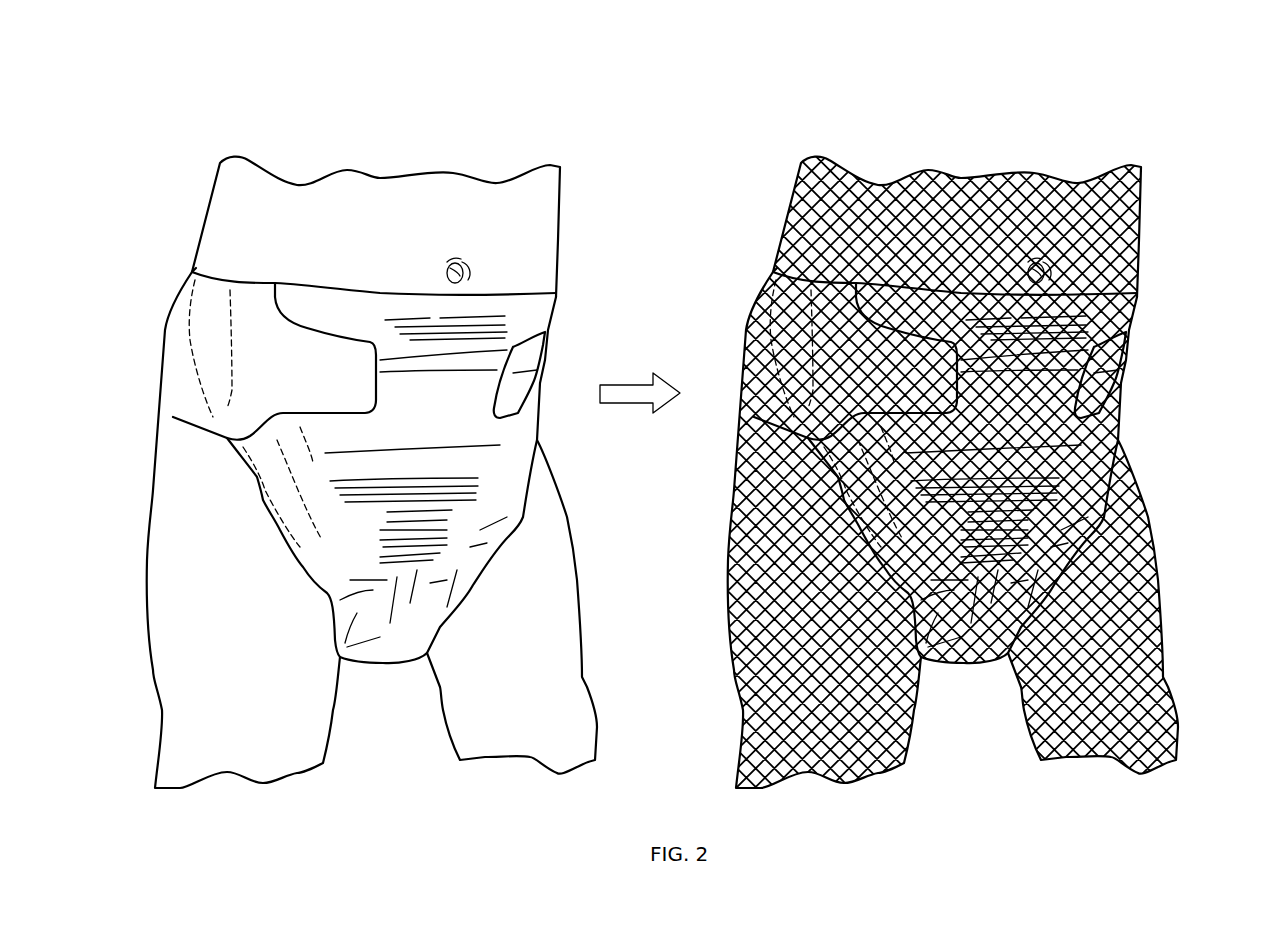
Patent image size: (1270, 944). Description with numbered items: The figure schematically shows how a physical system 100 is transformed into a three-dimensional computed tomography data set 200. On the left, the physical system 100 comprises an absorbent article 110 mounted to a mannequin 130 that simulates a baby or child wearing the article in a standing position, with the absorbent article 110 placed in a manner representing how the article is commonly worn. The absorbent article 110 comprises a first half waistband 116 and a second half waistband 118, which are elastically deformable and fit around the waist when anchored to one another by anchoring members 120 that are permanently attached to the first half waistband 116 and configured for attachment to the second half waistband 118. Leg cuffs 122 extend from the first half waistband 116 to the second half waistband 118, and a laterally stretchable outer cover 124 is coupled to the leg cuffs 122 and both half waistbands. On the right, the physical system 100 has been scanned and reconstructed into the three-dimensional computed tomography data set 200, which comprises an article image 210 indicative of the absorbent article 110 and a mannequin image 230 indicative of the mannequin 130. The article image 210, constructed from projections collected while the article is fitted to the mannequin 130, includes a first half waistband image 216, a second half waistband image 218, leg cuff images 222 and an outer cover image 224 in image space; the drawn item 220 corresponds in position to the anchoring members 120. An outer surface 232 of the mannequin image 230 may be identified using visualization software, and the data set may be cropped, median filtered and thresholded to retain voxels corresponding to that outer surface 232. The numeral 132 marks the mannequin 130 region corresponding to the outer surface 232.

The physical system 100 is at (395, 422).
The absorbent article 110 is at (395, 440).
The first half waistband 116 is at (195, 272).
The second half waistband 118 is at (515, 303).
The anchoring members 120 is at (535, 372).
The leg cuffs 122 is at (293, 527).
The outer cover 124 is at (433, 636).
The mannequin 130 is at (493, 210).
The waist opening edge 132 is at (365, 272).
The three-dimensional computed tomography data set 200 is at (661, 428).
The article image 210 is at (661, 459).
The first half waistband image 216 is at (767, 317).
The second half waistband image 218 is at (1088, 322).
The side panel 220 is at (950, 361).
The leg cuff images 222 is at (953, 530).
The outer cover image 224 is at (963, 550).
The mannequin image 230 is at (957, 207).
The outer surface 232 is at (955, 272).